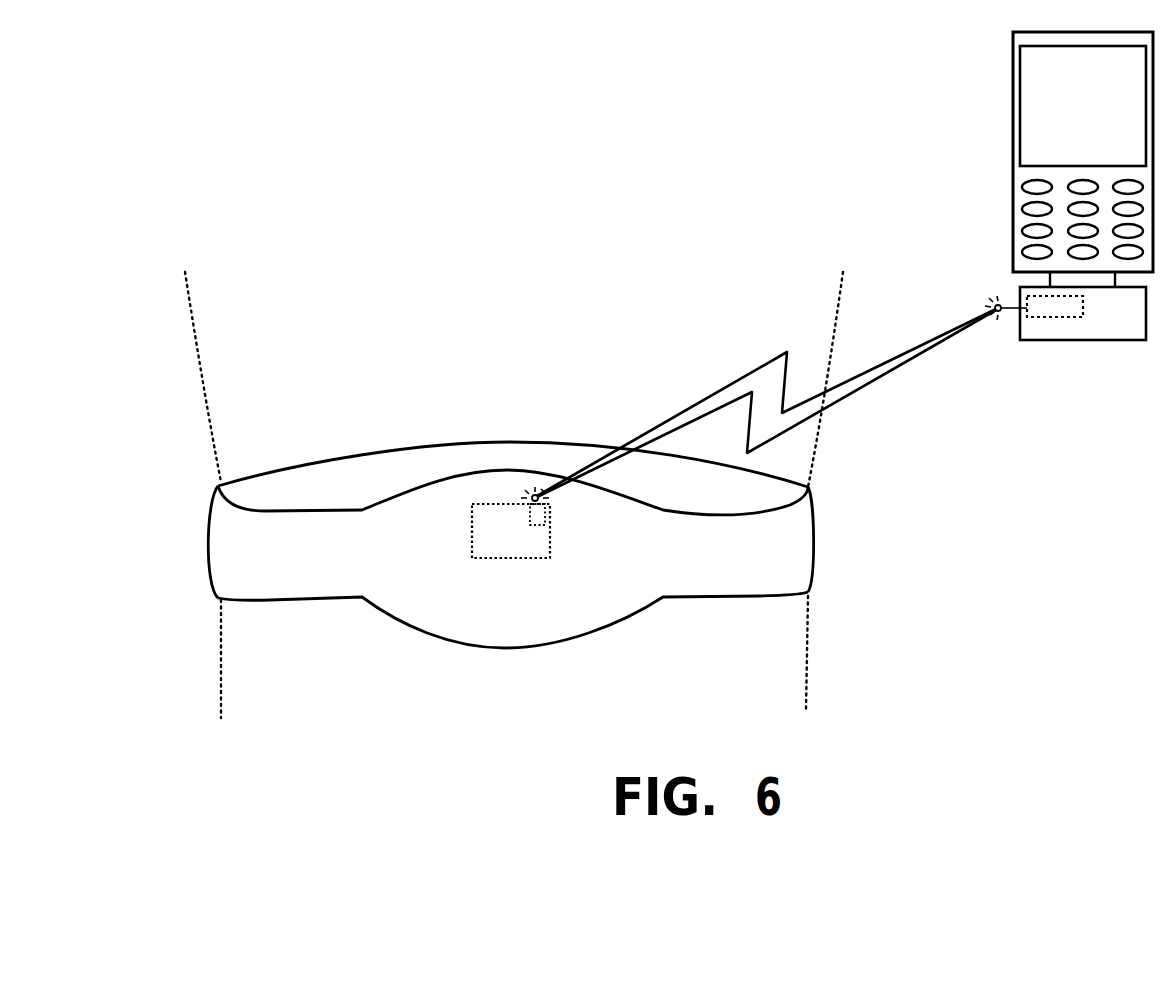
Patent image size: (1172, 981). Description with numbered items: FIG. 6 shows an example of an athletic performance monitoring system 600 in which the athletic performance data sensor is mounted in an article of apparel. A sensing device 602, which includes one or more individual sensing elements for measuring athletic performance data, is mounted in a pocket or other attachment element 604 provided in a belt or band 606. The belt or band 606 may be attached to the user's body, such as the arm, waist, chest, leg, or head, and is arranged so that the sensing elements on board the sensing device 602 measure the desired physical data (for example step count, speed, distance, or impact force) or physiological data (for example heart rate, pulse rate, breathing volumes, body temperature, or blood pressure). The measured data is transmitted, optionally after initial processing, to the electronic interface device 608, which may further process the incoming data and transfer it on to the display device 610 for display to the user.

The athletic performance monitoring system 600 is at (617, 155).
The sensing device 602 is at (490, 525).
The attachment element 604 is at (540, 560).
The belt or band 606 is at (538, 646).
The electronic interface device 608 is at (1082, 341).
The display device 610 is at (1013, 151).